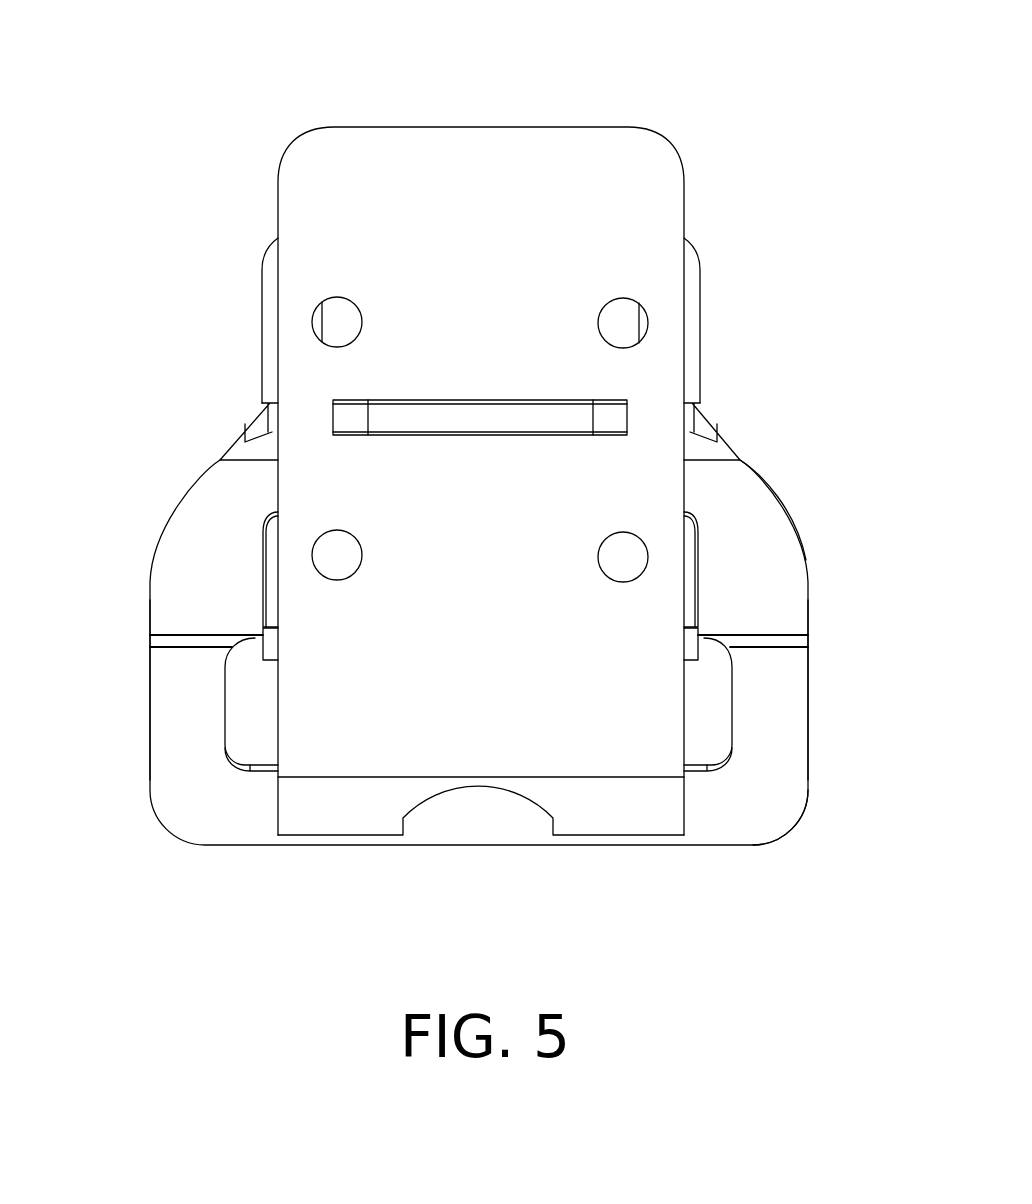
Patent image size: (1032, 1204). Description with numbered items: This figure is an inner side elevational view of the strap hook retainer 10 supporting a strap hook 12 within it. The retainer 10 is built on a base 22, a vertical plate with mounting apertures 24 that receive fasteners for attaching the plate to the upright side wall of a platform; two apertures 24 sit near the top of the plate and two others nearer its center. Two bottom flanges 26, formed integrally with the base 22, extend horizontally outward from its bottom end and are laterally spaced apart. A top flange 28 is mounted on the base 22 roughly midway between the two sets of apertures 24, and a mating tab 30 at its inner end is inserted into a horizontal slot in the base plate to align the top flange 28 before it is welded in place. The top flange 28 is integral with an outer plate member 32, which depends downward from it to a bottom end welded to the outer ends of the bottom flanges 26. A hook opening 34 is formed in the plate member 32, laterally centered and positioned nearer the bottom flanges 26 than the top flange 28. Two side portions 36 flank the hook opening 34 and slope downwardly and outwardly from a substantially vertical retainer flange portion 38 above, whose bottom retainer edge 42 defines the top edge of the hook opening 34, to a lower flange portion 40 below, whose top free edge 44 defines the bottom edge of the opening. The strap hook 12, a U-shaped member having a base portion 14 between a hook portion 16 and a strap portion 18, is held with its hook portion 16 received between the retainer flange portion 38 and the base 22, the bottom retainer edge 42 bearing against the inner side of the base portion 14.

The strap hook retainer 10 is at (500, 72).
The strap hook 12 is at (700, 343).
The base portion 14 is at (690, 662).
The hook portion 16 is at (695, 553).
The strap portion 18 is at (693, 290).
The base 22 is at (645, 208).
The mounting apertures 24 is at (350, 300).
The bottom flanges 26 is at (360, 832).
The top flange 28 is at (690, 415).
The mating tab 30 is at (487, 413).
The outer plate member 32 is at (814, 578).
The hook opening 34 is at (248, 712).
The side portions 36 is at (168, 716).
The retainer flange portion 38 is at (767, 530).
The lower flange portion 40 is at (702, 815).
The bottom retainer edge 42 is at (705, 637).
The top free edge 44 is at (690, 765).